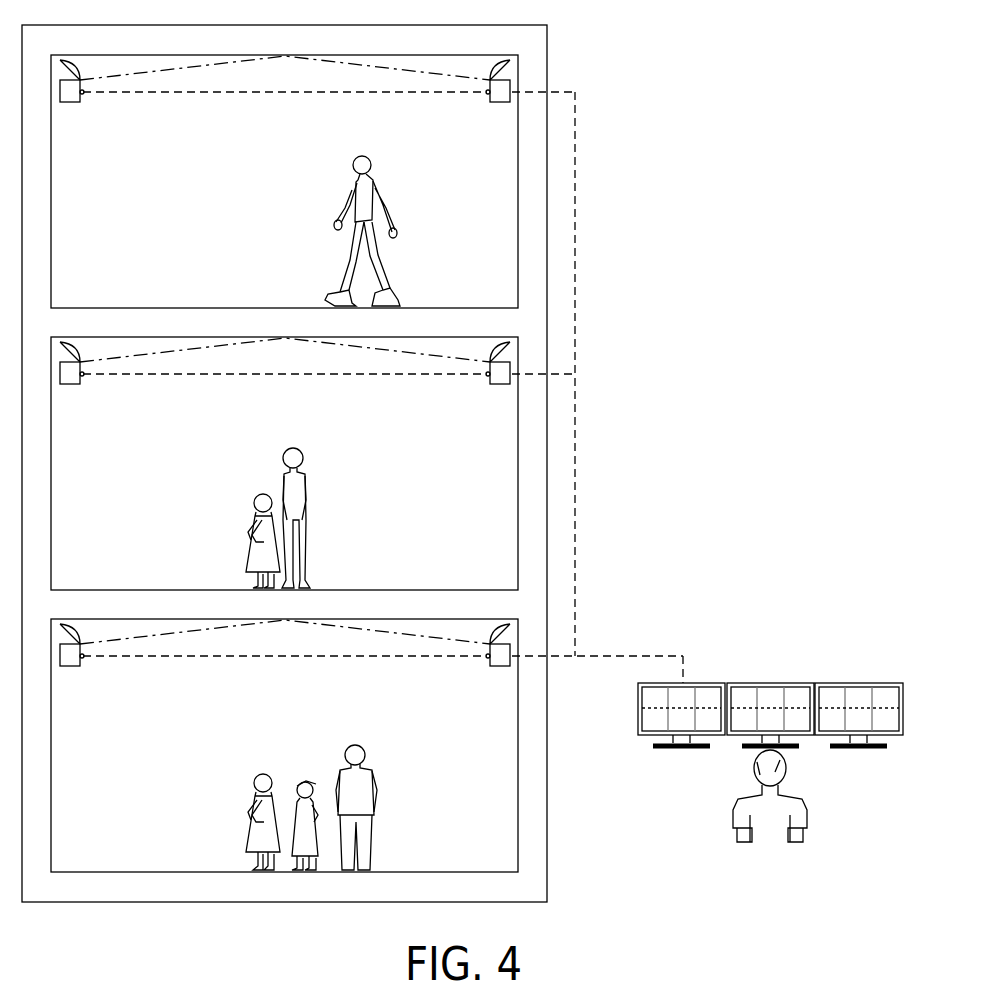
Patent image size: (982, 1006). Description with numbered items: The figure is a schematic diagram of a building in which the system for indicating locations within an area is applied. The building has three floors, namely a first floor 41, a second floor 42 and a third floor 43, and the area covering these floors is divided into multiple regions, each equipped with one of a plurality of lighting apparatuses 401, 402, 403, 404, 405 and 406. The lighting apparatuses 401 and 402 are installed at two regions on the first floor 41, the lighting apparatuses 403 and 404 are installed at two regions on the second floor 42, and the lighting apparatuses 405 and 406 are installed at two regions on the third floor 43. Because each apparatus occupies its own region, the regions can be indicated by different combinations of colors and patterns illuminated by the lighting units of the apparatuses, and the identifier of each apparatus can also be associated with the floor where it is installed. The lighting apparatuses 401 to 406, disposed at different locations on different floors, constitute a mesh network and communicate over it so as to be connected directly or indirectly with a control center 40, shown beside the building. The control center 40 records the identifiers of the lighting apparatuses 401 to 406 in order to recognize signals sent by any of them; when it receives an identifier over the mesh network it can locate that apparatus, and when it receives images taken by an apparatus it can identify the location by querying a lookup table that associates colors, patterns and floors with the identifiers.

The control center 40 is at (770, 682).
The first floor 41 is at (93, 862).
The second floor 42 is at (93, 580).
The third floor 43 is at (93, 298).
The lighting apparatus 401 is at (70, 667).
The lighting apparatus 402 is at (497, 667).
The lighting apparatus 403 is at (70, 385).
The lighting apparatus 404 is at (497, 385).
The lighting apparatus 405 is at (70, 103).
The lighting apparatus 406 is at (497, 103).